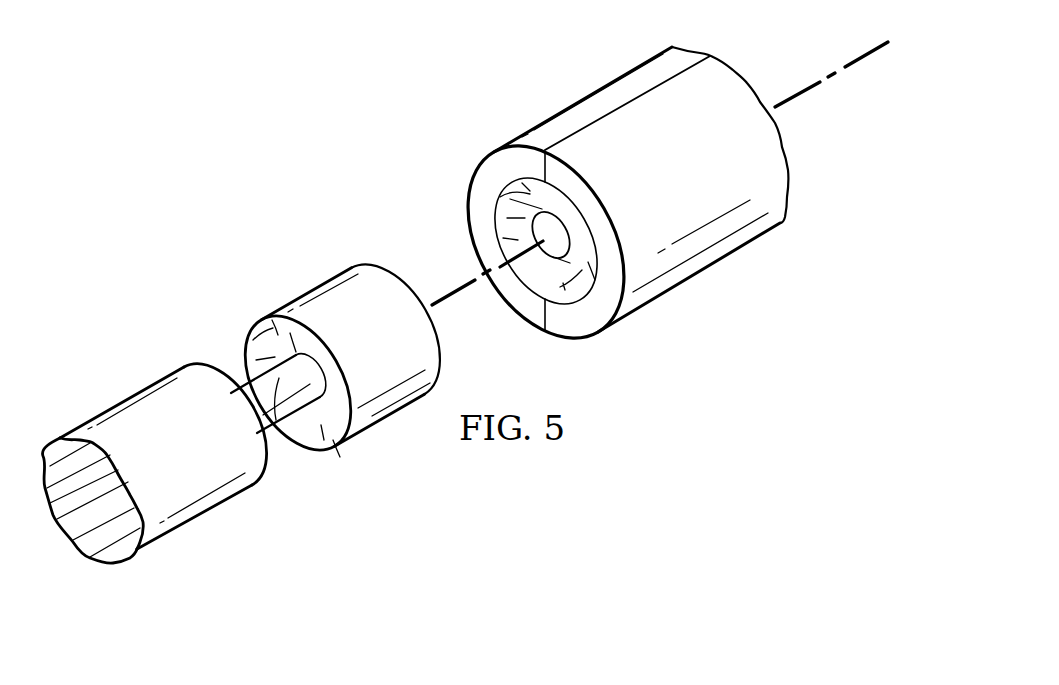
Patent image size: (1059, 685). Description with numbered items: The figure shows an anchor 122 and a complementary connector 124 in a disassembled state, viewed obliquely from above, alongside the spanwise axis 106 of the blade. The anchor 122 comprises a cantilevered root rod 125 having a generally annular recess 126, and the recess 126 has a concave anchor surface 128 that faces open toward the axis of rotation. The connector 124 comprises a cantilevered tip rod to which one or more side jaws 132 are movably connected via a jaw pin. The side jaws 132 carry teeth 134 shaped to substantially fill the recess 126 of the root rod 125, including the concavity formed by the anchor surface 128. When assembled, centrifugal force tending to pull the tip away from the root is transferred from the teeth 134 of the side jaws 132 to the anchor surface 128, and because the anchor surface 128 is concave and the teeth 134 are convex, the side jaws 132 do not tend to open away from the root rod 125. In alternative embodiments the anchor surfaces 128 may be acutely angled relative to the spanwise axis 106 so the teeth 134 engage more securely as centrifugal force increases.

The spanwise axis 106 is at (862, 53).
The anchor 122 is at (164, 481).
The connector 124 is at (602, 206).
The root rod 125 is at (208, 507).
The recess 126 is at (303, 423).
The anchor surface 128 is at (323, 440).
The side jaws 132 is at (590, 100).
The teeth 134 is at (503, 235).